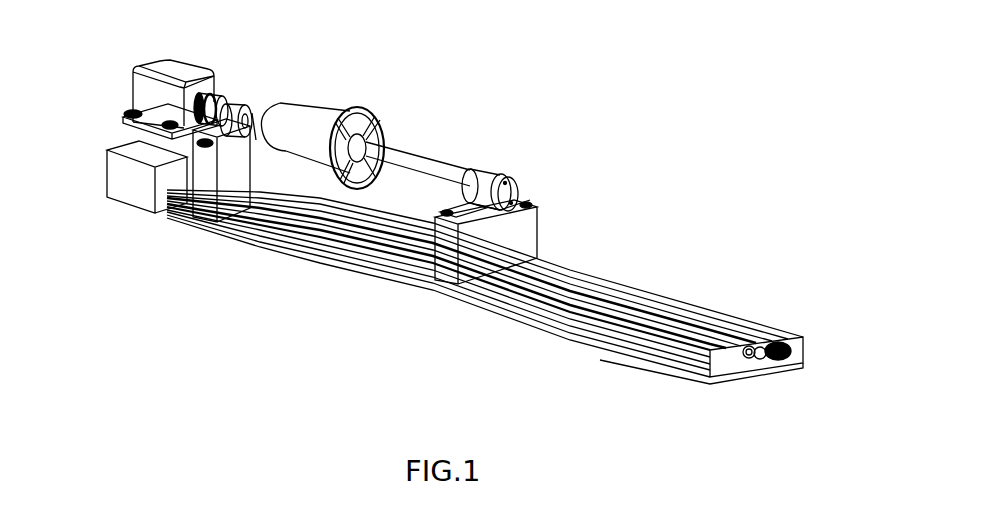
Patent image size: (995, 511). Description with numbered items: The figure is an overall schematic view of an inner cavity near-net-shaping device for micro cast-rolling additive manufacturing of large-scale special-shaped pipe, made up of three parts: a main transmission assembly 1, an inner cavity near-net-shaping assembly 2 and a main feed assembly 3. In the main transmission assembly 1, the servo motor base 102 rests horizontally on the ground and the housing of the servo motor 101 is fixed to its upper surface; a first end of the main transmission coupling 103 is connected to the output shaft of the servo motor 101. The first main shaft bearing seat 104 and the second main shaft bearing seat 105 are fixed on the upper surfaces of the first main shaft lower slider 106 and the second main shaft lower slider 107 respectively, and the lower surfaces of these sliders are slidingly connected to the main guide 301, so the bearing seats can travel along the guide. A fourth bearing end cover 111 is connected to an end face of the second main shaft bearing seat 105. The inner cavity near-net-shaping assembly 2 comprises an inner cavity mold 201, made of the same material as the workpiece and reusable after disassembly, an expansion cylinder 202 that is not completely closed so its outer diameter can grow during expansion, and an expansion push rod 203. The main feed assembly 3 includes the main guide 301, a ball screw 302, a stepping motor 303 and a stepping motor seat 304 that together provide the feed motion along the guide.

The main transmission assembly 1 is at (170, 127).
The servo motor 101 is at (137, 107).
The servo motor base 102 is at (107, 192).
The main transmission coupling 103 is at (212, 93).
The first main shaft bearing seat 104 is at (230, 112).
The second main shaft bearing seat 105 is at (403, 262).
The first main shaft lower slider 106 is at (195, 182).
The second main shaft lower slider 107 is at (540, 200).
The fourth bearing end cover 111 is at (507, 172).
The inner cavity near-net-shaping assembly 2 is at (222, 240).
The inner cavity mold 201 is at (293, 127).
The expansion cylinder 202 is at (372, 140).
The expansion push rod 203 is at (318, 262).
The main feed assembly 3 is at (590, 279).
The main guide 301 is at (690, 307).
The ball screw 302 is at (653, 360).
The stepping motor 303 is at (780, 333).
The stepping motor seat 304 is at (710, 375).